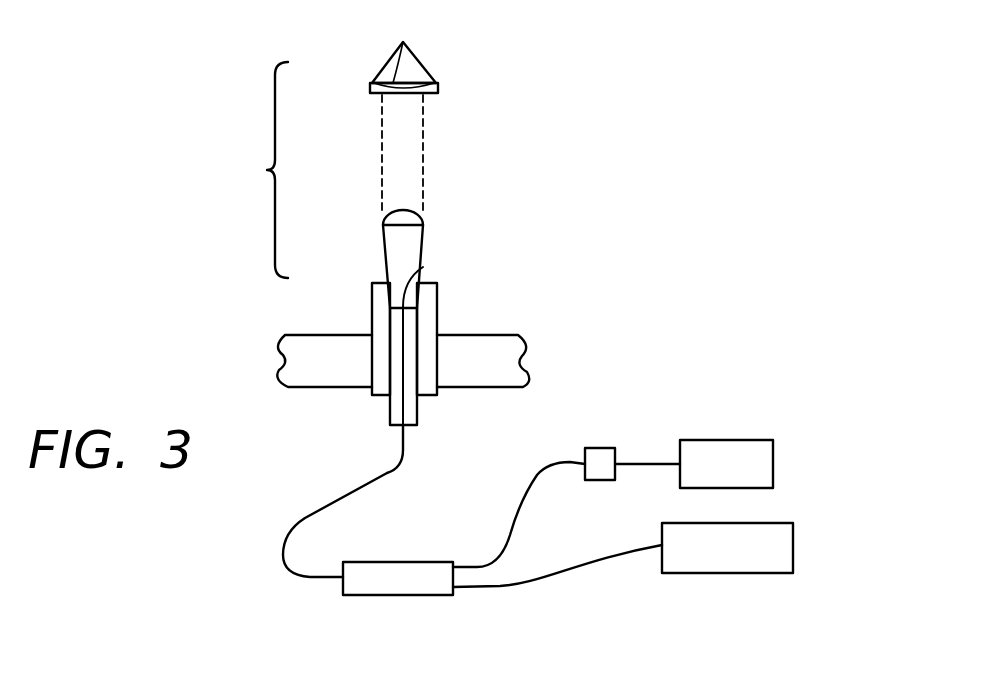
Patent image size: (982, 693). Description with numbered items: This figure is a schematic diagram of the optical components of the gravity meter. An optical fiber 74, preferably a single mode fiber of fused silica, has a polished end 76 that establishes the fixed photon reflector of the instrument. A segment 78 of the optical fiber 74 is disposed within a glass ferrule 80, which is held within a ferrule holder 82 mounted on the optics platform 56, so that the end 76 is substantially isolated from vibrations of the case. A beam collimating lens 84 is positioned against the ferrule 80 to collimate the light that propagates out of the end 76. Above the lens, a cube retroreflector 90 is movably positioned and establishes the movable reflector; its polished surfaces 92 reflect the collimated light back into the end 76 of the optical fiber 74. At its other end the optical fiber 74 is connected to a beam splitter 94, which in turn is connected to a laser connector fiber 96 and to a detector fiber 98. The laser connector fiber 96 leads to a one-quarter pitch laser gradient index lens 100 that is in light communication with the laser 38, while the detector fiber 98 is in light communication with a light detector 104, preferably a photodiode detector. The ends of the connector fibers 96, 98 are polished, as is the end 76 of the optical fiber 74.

The laser 38 is at (773, 458).
The optics platform 56 is at (535, 352).
The optical fiber 74 is at (387, 473).
The polished end 76 is at (423, 267).
The segment 78 is at (420, 410).
The glass ferrule 80 is at (388, 410).
The ferrule holder 82 is at (437, 296).
The beam collimating lens 84 is at (457, 232).
The cube retroreflector 90 is at (432, 68).
The polished surfaces 92 is at (397, 97).
The beam splitter 94 is at (388, 562).
The laser connector fiber 96 is at (523, 490).
The detector fiber 98 is at (583, 557).
The laser gradient index (GRIN) lens 100 is at (600, 447).
The light detector 104 is at (793, 540).